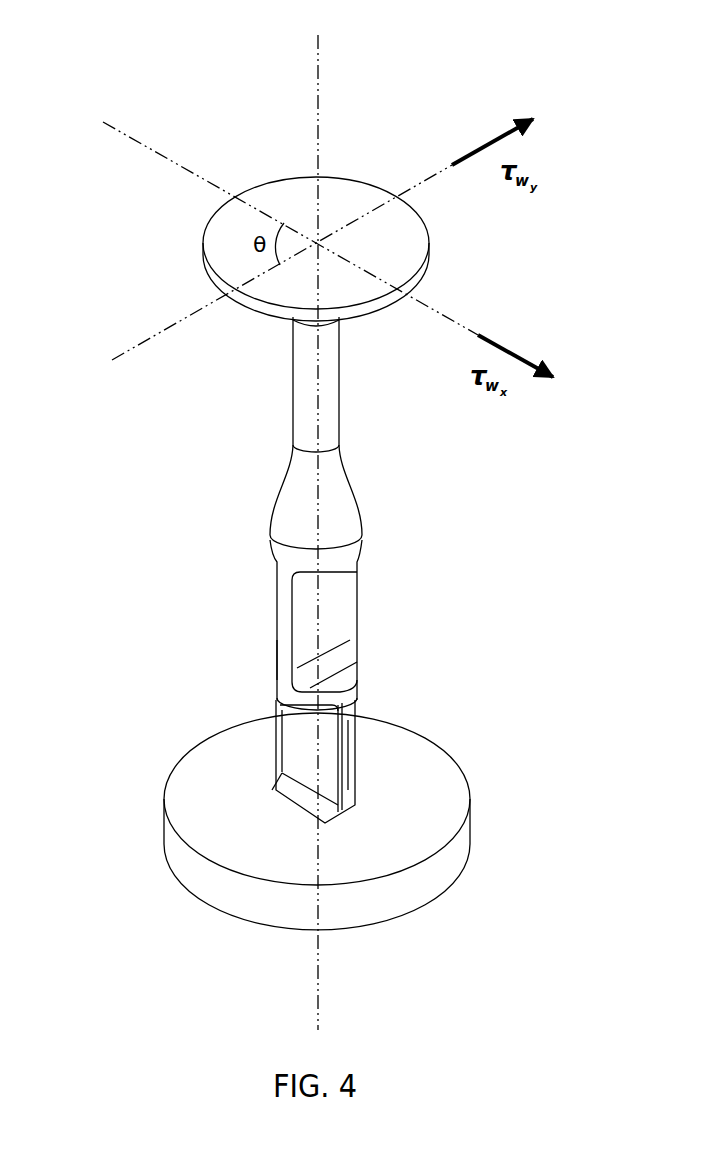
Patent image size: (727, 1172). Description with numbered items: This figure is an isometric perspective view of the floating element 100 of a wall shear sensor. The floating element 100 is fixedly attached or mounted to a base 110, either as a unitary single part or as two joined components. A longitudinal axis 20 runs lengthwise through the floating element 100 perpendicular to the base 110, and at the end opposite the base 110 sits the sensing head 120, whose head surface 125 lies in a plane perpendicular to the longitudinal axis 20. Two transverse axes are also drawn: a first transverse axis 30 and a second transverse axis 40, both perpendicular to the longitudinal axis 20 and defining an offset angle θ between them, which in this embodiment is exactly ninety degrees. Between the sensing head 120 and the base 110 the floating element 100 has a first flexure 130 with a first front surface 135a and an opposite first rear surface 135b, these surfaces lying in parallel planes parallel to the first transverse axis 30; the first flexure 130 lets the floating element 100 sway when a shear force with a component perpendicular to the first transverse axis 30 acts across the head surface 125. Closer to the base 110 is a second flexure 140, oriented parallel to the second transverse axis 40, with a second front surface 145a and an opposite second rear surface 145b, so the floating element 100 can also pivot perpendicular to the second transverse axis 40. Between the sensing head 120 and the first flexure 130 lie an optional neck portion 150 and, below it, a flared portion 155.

The floating element 100 is at (437, 116).
The longitudinal axis 20 is at (314, 88).
The first transverse axis 30 is at (170, 319).
The second transverse axis 40 is at (136, 143).
The base 110 is at (440, 860).
The sensing head 120 is at (418, 283).
The head surface 125 is at (392, 246).
The first flexure 130 is at (285, 630).
The first front surface 135a is at (338, 604).
The first rear surface 135b is at (274, 581).
The second flexure 140 is at (348, 768).
The second front surface 145a is at (296, 753).
The second rear surface 145b is at (360, 740).
The neck portion 150 is at (342, 385).
The flared portion 155 is at (340, 513).